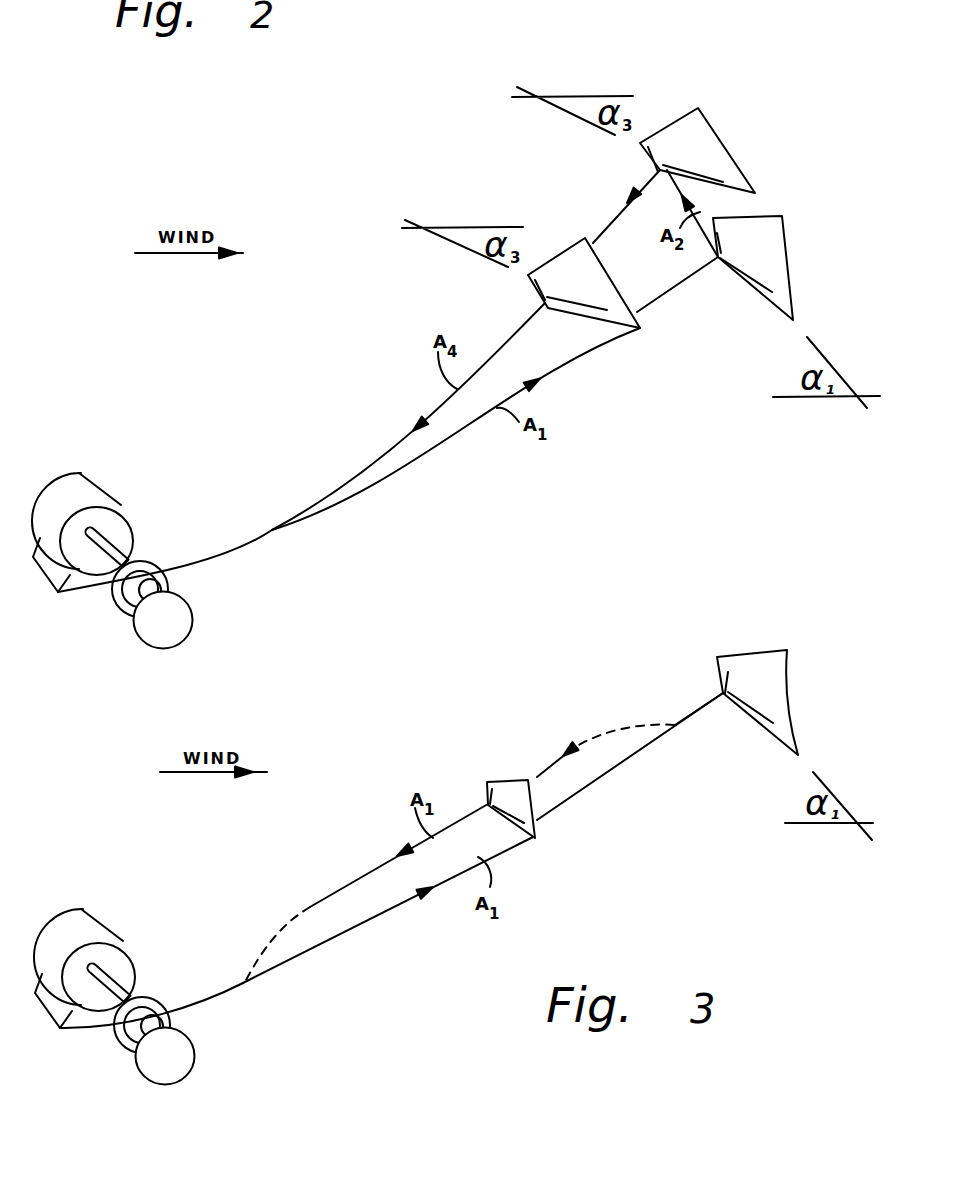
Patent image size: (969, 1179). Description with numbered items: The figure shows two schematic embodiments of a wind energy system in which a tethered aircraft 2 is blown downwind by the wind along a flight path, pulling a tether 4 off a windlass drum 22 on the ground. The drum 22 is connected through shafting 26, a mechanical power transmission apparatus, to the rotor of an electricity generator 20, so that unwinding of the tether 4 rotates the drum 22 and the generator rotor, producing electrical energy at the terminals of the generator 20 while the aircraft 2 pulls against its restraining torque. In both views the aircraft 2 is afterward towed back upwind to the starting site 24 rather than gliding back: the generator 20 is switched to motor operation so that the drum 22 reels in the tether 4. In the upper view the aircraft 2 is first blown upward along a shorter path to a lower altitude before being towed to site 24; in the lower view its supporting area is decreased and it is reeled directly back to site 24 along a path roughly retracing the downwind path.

In FIG. 2, the tethered aircraft 2 is at (565, 250).
In FIG. 3, the tethered aircraft 2 is at (513, 782).
In FIG. 2, the tether 4 is at (353, 475).
In FIG. 3, the tether 4 is at (365, 875).
In FIG. 2, the electricity generator 20 is at (102, 480).
In FIG. 3, the electricity generator 20 is at (104, 918).
In FIG. 2, the windlass drum 22 is at (152, 647).
In FIG. 3, the windlass drum 22 is at (152, 1087).
In FIG. 2, the site 24 is at (255, 543).
In FIG. 3, the site 24 is at (247, 987).
In FIG. 2, the shafting 26 is at (128, 558).
In FIG. 3, the shafting 26 is at (133, 990).